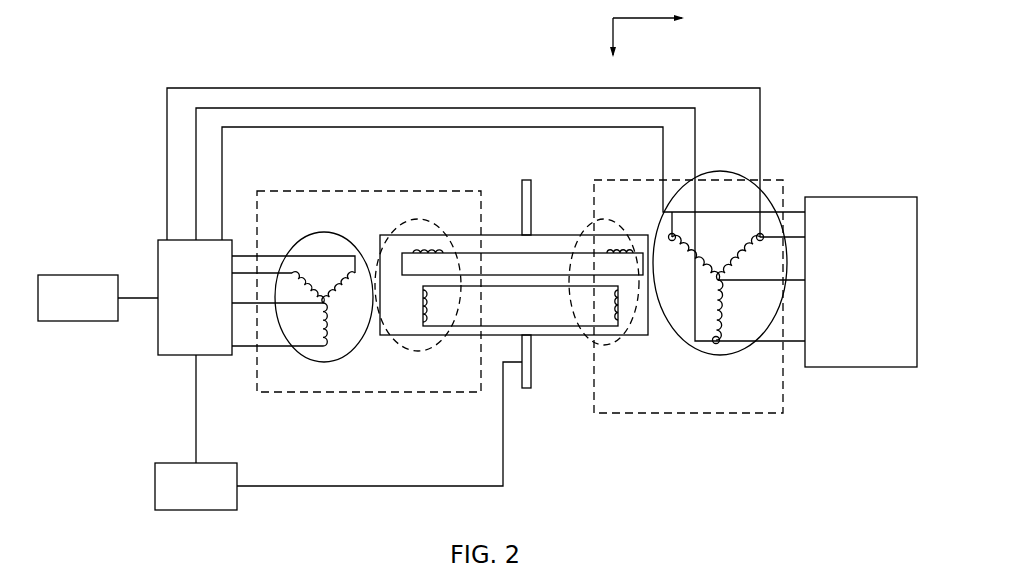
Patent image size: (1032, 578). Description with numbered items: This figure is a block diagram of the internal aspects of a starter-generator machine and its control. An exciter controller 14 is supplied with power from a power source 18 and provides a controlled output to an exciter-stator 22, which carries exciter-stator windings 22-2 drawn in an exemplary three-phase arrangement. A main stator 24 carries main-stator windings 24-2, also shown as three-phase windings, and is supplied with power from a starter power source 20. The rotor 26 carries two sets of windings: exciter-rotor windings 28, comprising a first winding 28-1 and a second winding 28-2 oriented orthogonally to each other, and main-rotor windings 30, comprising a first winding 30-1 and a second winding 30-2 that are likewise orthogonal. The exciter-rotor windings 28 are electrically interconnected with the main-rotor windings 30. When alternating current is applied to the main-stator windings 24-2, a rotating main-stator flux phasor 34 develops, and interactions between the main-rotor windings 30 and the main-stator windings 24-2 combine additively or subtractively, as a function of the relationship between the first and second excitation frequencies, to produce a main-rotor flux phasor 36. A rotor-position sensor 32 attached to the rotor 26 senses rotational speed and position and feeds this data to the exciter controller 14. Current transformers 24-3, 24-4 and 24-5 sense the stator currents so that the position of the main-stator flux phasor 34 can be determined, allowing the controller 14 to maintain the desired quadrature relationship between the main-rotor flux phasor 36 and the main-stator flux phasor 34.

The exciter controller 14 is at (171, 356).
The power source 18 is at (73, 275).
The starter power source 20 is at (862, 368).
The exciter-stator 22 is at (369, 310).
The exciter-stator windings 22-2 is at (313, 289).
The main stator 24 is at (690, 292).
The main-stator windings 24-2 is at (719, 289).
The current transformer 24-3 is at (756, 238).
The current transformer 24-4 is at (673, 242).
The current transformer 24-5 is at (717, 344).
The rotor 26 is at (531, 370).
The exciter-rotor windings 28 is at (511, 299).
The first winding 28-1 is at (436, 250).
The second winding 28-2 is at (429, 306).
The main-rotor windings 30 is at (580, 250).
The first winding 30-1 is at (607, 252).
The second winding 30-2 is at (613, 307).
The rotor-position sensor 32 is at (167, 463).
The main-stator flux phasor 34 is at (612, 36).
The main-rotor flux phasor 36 is at (650, 20).